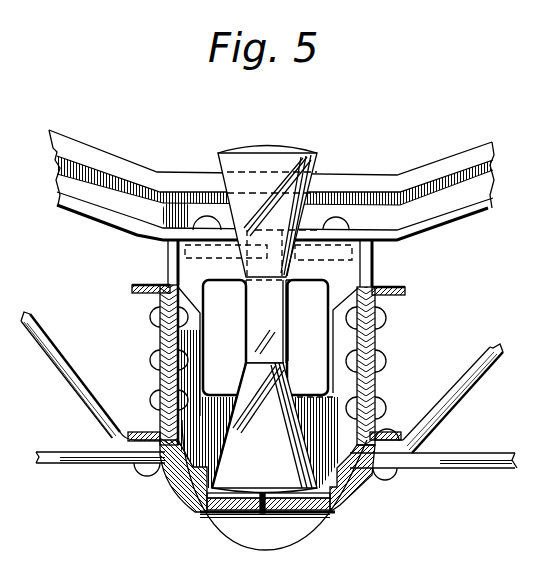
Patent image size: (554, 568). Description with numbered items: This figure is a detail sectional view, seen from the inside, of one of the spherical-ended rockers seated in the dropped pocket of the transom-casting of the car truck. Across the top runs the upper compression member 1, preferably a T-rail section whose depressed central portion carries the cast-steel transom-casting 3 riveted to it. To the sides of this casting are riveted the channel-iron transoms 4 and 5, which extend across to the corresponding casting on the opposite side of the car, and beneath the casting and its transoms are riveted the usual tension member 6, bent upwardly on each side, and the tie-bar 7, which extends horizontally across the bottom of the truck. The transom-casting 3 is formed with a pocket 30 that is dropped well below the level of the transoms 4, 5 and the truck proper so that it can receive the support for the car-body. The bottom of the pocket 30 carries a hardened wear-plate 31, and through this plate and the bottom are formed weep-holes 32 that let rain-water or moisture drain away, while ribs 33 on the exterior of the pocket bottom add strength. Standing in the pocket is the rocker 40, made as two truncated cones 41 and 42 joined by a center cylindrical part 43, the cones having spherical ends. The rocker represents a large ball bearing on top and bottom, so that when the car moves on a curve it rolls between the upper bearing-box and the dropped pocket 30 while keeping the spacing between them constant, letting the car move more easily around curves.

The upper compression member 1 is at (397, 181).
The transom-casting 3 is at (345, 272).
The channel-iron transom 4 is at (388, 295).
The channel-iron transom 5 is at (152, 293).
The tension member 6 is at (78, 394).
The tie-bar 7 is at (97, 462).
The pocket 30 is at (187, 470).
The wear-plate 31 is at (327, 513).
The weep-holes 32 is at (257, 505).
The ribs 33 is at (293, 537).
The rocker 40 is at (286, 277).
The truncated cone 41 is at (310, 157).
The truncated cone 42 is at (264, 428).
The center cylindrical part 43 is at (262, 328).